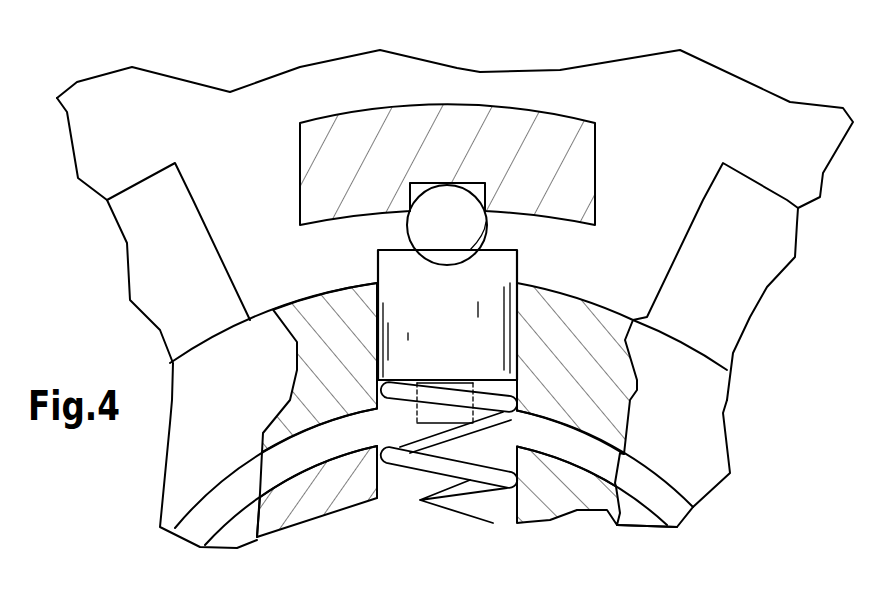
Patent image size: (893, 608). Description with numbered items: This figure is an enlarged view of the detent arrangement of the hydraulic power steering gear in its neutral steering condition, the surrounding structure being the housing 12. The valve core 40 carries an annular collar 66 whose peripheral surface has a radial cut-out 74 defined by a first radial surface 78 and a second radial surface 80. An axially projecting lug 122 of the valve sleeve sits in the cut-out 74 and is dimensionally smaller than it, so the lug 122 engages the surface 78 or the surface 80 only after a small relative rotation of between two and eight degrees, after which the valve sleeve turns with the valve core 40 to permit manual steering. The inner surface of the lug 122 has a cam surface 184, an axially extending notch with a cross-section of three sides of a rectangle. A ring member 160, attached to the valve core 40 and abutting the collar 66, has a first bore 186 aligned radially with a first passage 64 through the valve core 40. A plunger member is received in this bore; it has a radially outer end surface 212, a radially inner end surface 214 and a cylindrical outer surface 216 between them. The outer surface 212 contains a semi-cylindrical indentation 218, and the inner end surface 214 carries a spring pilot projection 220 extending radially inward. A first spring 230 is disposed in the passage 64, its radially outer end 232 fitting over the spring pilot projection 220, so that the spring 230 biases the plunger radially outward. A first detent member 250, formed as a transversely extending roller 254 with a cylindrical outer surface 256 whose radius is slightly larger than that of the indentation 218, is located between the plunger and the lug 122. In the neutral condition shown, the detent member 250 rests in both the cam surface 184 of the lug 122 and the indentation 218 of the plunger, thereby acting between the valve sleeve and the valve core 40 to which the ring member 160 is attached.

The housing 12 is at (150, 90).
The roller 254 is at (450, 197).
The lug 122 is at (487, 133).
The radial cut-out 74 is at (667, 135).
The second radial surface 80 is at (193, 200).
The first detent member 250 is at (433, 203).
The cam surface 184 is at (477, 197).
The first radial surface 78 is at (710, 185).
The cylindrical outer surface 256 is at (433, 203).
The indentation 218 is at (505, 270).
The radially outer end surface 212 is at (387, 242).
The radially outer end 232 is at (497, 385).
The annular collar 66 is at (723, 308).
The cylindrical outer surface 216 is at (375, 320).
The ring member 160 is at (690, 398).
The radially inner end surface 214 is at (377, 400).
The first bore 186 is at (517, 435).
The spring pilot projection 220 is at (420, 415).
The first spring 230 is at (423, 463).
The first passage 64 is at (517, 505).
The valve core 40 is at (570, 493).